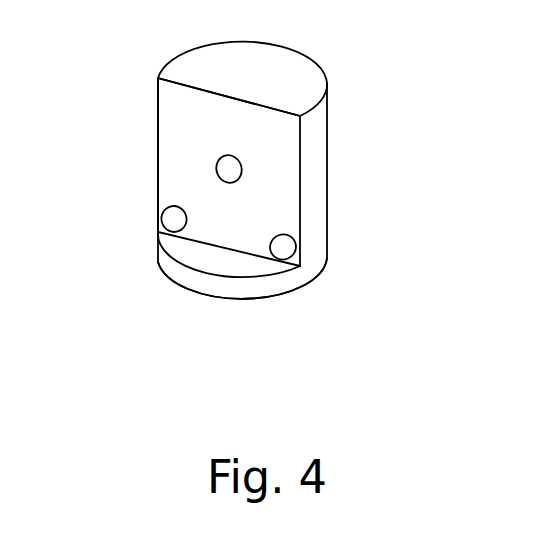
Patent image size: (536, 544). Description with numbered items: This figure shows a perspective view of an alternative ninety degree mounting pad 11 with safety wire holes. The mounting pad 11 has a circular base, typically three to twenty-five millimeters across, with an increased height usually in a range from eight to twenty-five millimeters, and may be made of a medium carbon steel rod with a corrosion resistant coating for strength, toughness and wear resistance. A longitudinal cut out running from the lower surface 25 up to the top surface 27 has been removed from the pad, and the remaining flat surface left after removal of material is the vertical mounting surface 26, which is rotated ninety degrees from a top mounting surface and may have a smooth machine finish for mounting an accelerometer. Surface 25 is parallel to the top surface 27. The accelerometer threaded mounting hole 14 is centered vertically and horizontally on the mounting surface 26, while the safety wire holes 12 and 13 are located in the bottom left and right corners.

The 90 degree mounting pad 11 is at (197, 283).
The safety wire hole 12 is at (298, 258).
The safety wire hole 13 is at (158, 228).
The accelerometer threaded mounting hole 14 is at (247, 173).
The surface 25 is at (222, 268).
The vertical mounting surface 26 is at (182, 133).
The top surface 27 is at (260, 75).